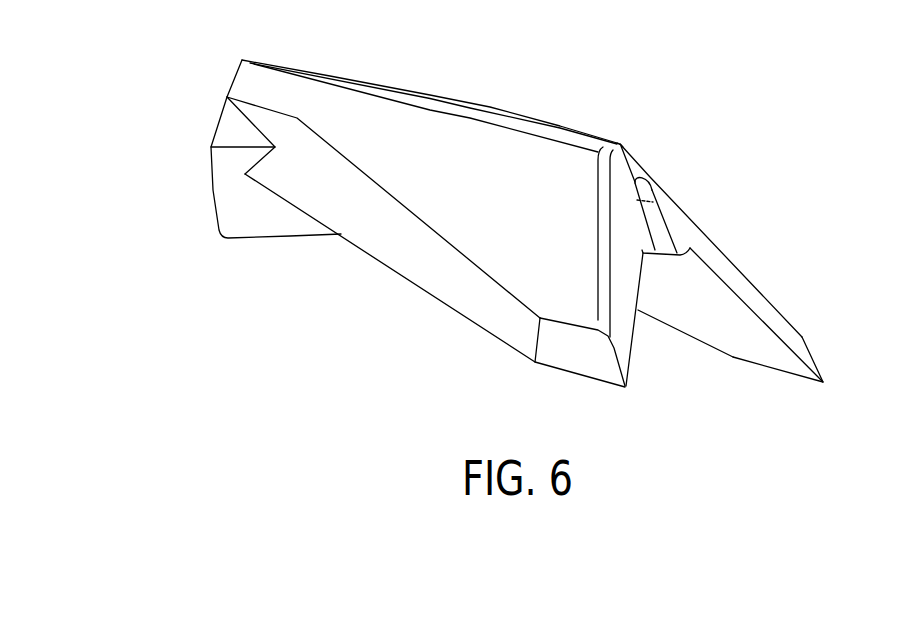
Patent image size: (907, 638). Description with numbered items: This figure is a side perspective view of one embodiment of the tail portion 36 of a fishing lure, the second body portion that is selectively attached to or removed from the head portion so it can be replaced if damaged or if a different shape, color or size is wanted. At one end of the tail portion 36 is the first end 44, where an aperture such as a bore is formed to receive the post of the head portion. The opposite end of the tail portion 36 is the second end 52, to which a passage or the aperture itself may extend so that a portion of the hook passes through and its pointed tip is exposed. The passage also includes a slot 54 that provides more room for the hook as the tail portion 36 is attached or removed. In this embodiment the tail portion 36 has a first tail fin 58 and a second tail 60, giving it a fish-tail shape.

The tail portion 36 is at (265, 264).
The first end 44 is at (170, 184).
The second end 52 is at (725, 392).
The slot 54 is at (665, 205).
The first tail fin 58 is at (590, 370).
The second tail 60 is at (808, 347).